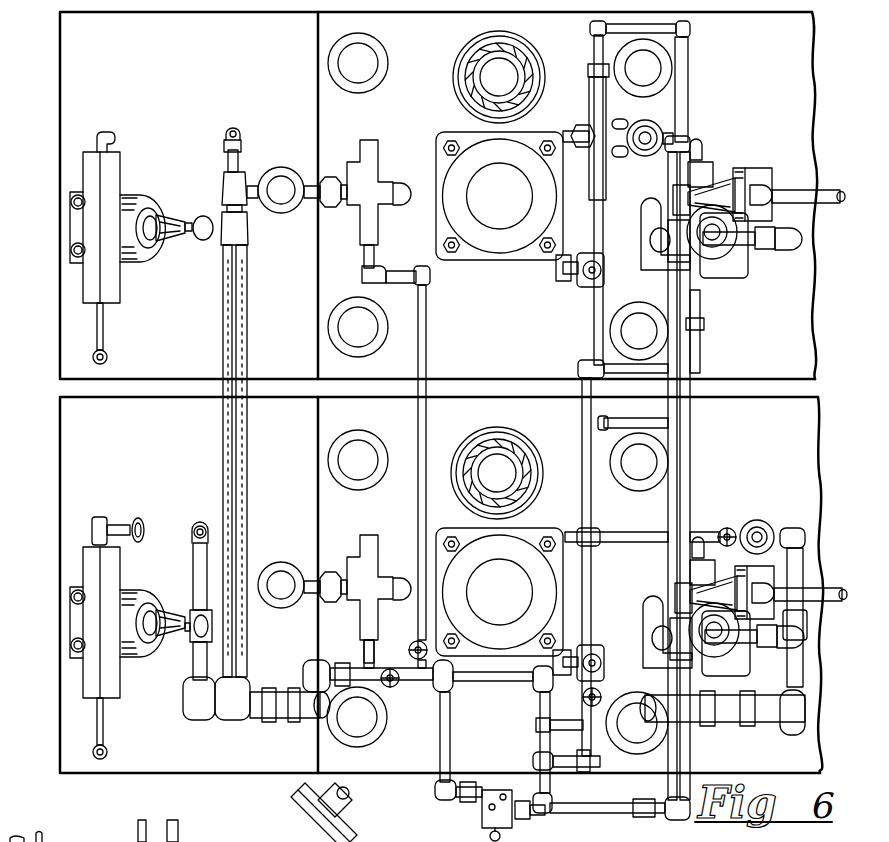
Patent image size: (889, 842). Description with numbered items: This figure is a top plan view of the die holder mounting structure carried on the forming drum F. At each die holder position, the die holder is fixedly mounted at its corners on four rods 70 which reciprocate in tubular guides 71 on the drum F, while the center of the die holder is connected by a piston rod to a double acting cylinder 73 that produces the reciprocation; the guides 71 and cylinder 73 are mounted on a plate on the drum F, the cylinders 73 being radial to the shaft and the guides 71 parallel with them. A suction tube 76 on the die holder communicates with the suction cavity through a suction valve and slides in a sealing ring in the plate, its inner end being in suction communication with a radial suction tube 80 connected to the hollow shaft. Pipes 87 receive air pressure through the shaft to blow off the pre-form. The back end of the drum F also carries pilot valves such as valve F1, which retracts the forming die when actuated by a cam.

The rod 70 is at (355, 343).
The tubular guide 71 is at (328, 318).
The double acting cylinder 73 is at (472, 237).
The suction tube 76 is at (476, 90).
The radial suction tube 80 is at (470, 55).
The pipe 87 is at (300, 725).
The pilot valve F1 is at (487, 815).
The forming drum F is at (46, 442).